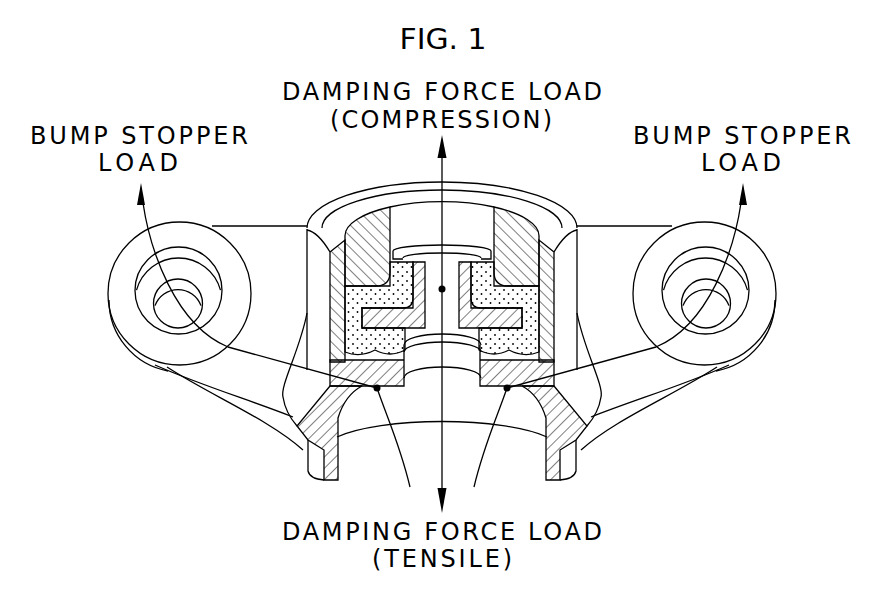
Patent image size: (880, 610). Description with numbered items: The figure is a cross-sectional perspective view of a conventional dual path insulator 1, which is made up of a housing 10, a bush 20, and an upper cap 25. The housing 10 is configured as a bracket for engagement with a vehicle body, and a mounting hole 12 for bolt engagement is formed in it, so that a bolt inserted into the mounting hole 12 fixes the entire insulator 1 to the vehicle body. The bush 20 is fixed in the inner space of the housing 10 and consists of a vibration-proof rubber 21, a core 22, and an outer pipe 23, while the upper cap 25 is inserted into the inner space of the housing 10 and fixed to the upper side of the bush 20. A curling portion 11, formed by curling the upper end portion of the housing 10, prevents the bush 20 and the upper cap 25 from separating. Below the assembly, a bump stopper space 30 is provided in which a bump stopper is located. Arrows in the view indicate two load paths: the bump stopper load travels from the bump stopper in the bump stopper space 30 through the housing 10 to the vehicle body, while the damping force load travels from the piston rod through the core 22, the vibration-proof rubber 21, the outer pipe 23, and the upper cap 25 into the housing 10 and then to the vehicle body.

The insulator 1 is at (838, 233).
The housing 10 is at (643, 378).
The curling portion 11 is at (345, 235).
The mounting hole 12 is at (732, 302).
The bush 20 is at (452, 226).
The vibration-proof rubber 21 is at (377, 388).
The core 22 is at (413, 314).
The outer pipe 23 is at (530, 288).
The upper cap 25 is at (500, 242).
The bump stopper space 30 is at (368, 417).